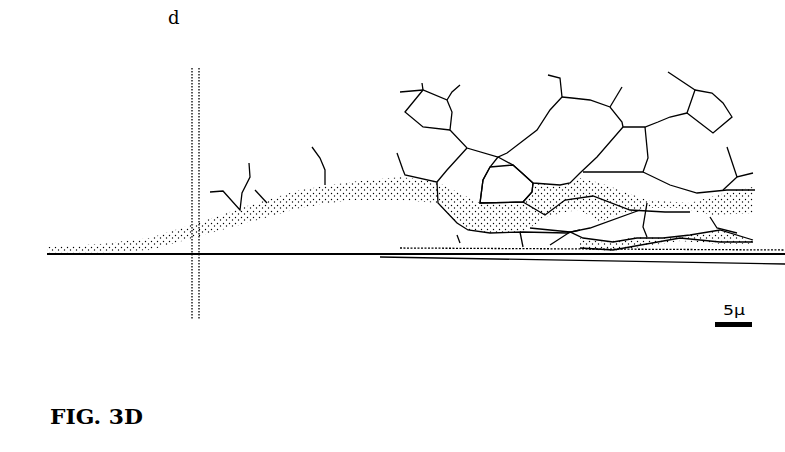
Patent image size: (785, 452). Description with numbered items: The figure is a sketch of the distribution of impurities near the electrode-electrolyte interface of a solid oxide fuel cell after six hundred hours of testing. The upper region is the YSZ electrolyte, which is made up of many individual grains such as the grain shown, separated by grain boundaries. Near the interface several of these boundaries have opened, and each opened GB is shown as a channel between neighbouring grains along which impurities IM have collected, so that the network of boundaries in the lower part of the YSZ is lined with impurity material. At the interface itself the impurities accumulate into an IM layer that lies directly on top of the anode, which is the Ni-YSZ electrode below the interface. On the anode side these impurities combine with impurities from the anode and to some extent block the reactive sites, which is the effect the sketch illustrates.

The opened grain boundary opened GB is at (553, 110).
The element grain is at (513, 187).
The impurities IM is at (690, 245).
The impurity layer IM layer is at (95, 250).
The YSZ electrolyte YSZ is at (111, 107).
The element anode is at (213, 275).